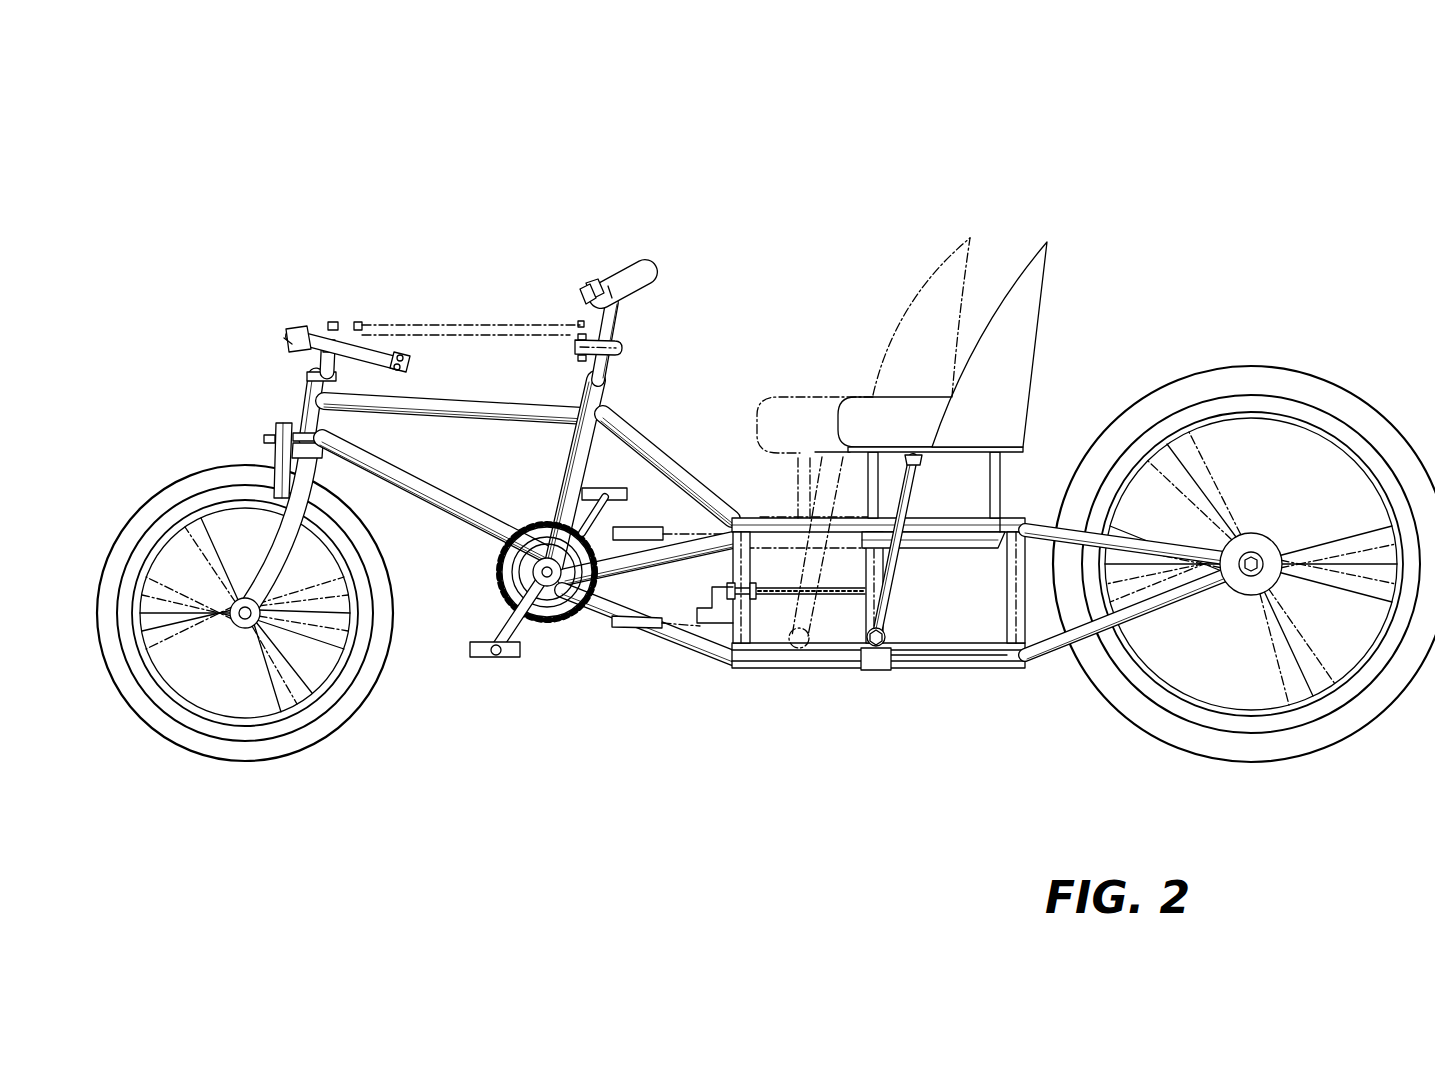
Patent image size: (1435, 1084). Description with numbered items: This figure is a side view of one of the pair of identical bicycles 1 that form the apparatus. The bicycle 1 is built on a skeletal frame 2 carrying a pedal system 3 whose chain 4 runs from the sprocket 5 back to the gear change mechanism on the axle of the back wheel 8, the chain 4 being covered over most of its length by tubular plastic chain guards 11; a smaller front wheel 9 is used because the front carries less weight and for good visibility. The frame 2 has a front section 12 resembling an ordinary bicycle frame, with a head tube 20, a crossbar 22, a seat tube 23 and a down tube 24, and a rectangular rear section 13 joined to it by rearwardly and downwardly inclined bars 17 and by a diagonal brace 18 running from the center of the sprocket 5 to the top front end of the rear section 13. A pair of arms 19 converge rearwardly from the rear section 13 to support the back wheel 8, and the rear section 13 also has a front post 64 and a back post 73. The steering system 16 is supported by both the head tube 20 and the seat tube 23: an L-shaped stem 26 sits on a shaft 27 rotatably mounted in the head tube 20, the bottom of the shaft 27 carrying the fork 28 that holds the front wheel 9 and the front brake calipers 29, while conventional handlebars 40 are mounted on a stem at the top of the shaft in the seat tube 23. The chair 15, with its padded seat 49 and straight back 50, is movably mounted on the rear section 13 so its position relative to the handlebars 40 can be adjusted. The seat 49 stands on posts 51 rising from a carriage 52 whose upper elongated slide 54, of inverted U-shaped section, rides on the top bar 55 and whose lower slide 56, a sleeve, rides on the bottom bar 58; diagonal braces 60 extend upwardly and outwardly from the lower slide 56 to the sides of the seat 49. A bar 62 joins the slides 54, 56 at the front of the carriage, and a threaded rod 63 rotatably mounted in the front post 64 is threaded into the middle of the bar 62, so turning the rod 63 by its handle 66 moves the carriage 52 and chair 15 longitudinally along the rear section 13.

The bicycle 1 is at (715, 313).
The skeletal frame 2 is at (803, 730).
The pedal system 3 is at (478, 660).
The chain 4 is at (592, 622).
The sprocket 5 is at (500, 593).
The back wheel 8 is at (1215, 380).
The front wheel 9 is at (345, 715).
The tubular plastic chain guard 11 is at (637, 540).
The front section 12 is at (442, 400).
The rectangular rear section 13 is at (933, 655).
The chair 15 is at (1047, 242).
The steering system 16 is at (388, 272).
The inclined bar 17 is at (610, 425).
The diagonal brace 18 is at (667, 552).
The arm 19 is at (1195, 545).
The head tube 20 is at (307, 410).
The crossbar 22 is at (517, 407).
The seat tube 23 is at (562, 462).
The down tube 24 is at (430, 505).
The L-shaped stem 26 is at (322, 332).
The shaft 27 is at (320, 360).
The fork 28 is at (278, 547).
The front brake caliper 29 is at (270, 455).
The handlebars 40 is at (592, 287).
The padded seat 49 is at (903, 434).
The straight back 50 is at (1006, 404).
The post 51 is at (877, 487).
The carriage 52 is at (1000, 520).
The upper elongated slide 54 is at (968, 537).
The top bar 55 is at (755, 520).
The lower slide 56 is at (880, 672).
The bottom bar 58 is at (982, 660).
The diagonal brace 60 is at (900, 572).
The bar 62 is at (866, 596).
The threaded rod 63 is at (830, 600).
The front post 64 is at (745, 650).
The handle 66 is at (703, 620).
The back post 73 is at (1022, 625).